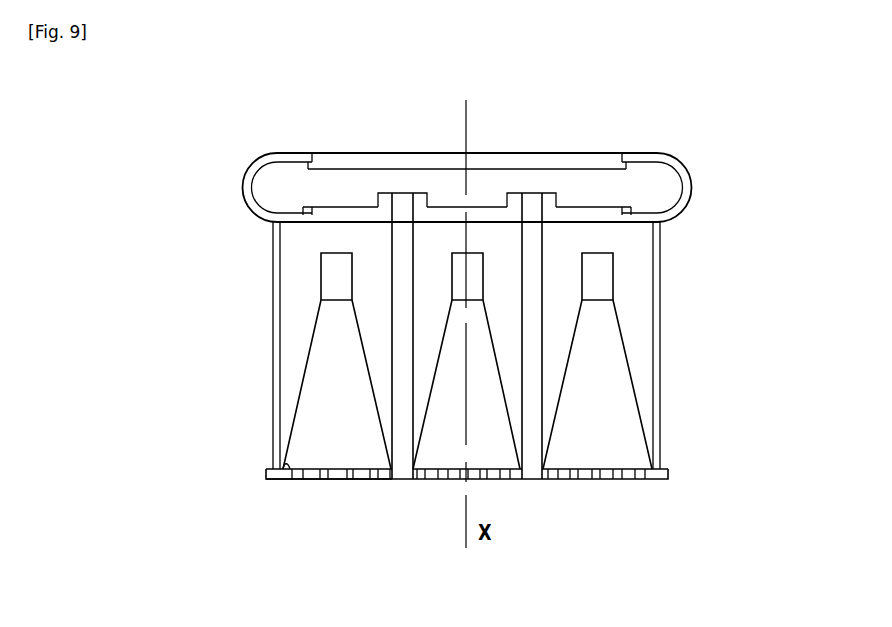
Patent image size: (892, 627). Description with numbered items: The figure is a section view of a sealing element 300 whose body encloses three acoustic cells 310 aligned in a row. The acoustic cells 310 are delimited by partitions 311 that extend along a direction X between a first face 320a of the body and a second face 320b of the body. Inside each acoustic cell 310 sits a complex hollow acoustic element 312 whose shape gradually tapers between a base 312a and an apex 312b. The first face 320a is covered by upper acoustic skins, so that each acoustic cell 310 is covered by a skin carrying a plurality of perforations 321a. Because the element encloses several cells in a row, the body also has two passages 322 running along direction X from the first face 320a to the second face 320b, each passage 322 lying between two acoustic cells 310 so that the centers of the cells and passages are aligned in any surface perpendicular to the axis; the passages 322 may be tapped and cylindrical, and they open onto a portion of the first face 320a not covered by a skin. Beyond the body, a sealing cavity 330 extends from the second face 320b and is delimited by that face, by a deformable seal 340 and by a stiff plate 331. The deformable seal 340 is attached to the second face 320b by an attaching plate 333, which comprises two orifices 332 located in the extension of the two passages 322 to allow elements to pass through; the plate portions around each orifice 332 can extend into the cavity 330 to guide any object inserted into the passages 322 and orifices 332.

The sealing element 300 is at (738, 332).
The acoustic cell 310 is at (302, 246).
The partition 311 is at (388, 334).
The complex hollow acoustic element 312 is at (333, 380).
The base 312a is at (285, 458).
The apex 312b is at (333, 288).
The first face 320a is at (624, 483).
The second face 320b is at (605, 226).
The perforation 321a is at (348, 483).
The passage 322 is at (405, 428).
The sealing cavity 330 is at (483, 186).
The stiff plate 331 is at (597, 162).
The orifice 332 is at (402, 203).
The attaching plate 333 is at (342, 203).
The deformable seal 340 is at (246, 184).